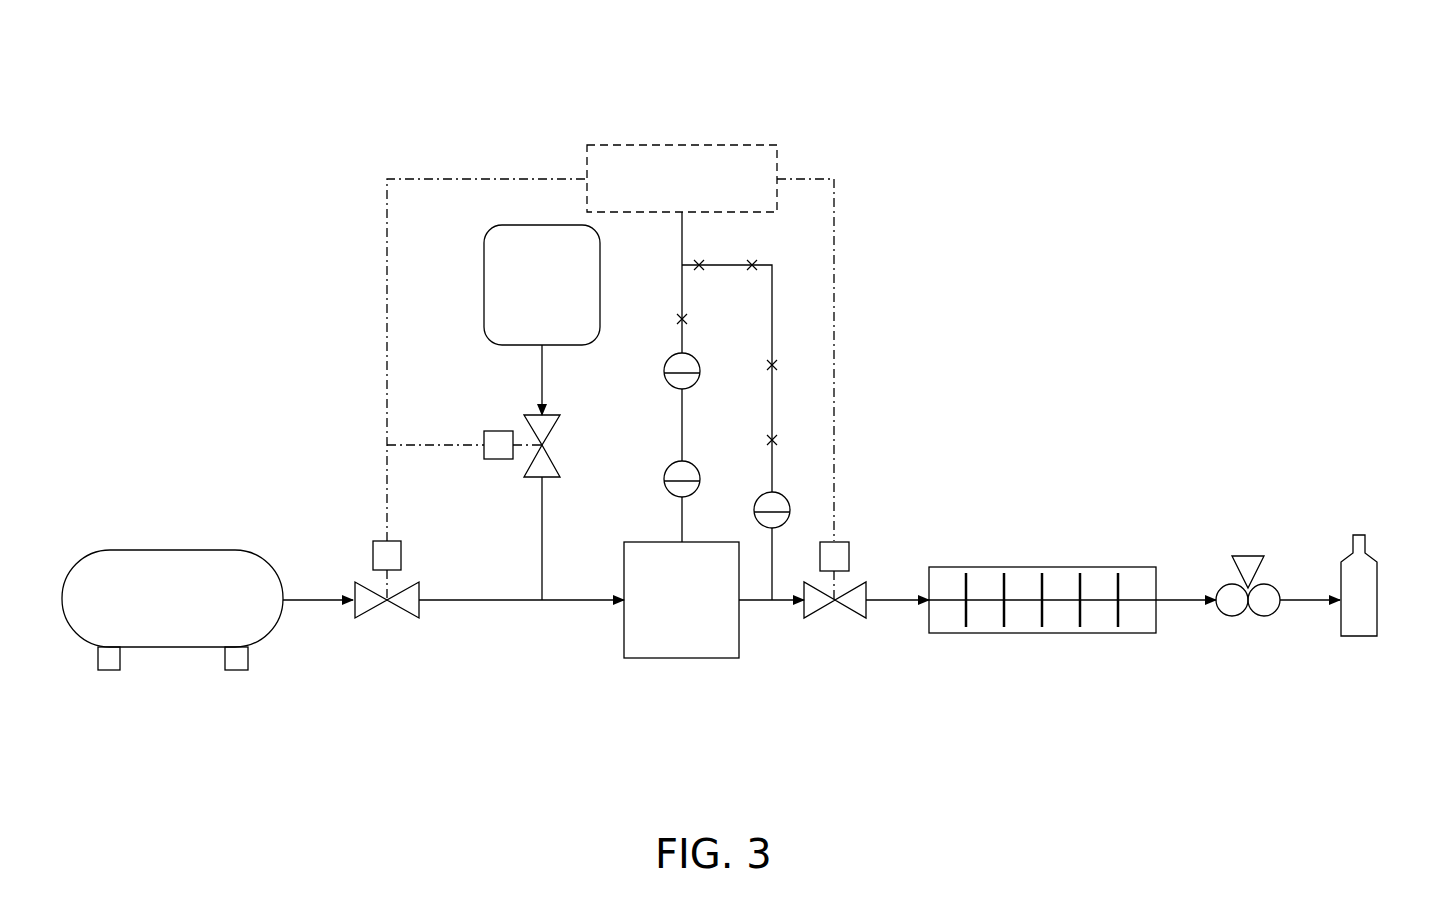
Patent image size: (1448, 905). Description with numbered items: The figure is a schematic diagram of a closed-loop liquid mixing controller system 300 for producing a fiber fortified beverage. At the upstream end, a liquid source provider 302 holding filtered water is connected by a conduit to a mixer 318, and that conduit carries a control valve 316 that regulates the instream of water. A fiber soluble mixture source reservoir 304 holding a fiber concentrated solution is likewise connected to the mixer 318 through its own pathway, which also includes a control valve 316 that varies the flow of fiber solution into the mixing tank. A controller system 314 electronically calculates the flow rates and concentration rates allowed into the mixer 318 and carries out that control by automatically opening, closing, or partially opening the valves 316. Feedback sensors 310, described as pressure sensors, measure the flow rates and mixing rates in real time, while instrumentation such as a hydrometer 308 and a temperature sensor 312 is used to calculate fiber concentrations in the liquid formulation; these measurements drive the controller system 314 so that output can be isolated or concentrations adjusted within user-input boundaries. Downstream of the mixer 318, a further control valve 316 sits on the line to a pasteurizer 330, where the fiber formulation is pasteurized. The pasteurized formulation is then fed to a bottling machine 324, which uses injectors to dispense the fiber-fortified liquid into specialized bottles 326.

The mixing controller system 300 is at (1060, 113).
The liquid source provider 302 is at (183, 530).
The fiber soluble mixture source reservoir 304 is at (533, 220).
The hydrometer 308 is at (802, 493).
The pressure sensor 310 is at (705, 353).
The temperature sensor 312 is at (700, 452).
The controller system 314 is at (722, 135).
The control valve 316 is at (348, 540).
The mixer 318 is at (660, 680).
The bottling machine 324 is at (1250, 537).
The bottle 326 is at (1364, 642).
The pasteurizer 330 is at (1057, 535).